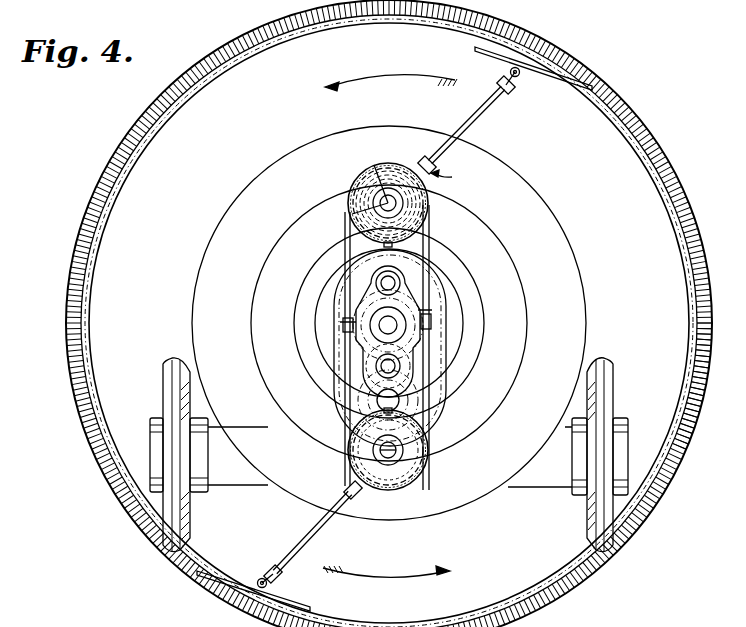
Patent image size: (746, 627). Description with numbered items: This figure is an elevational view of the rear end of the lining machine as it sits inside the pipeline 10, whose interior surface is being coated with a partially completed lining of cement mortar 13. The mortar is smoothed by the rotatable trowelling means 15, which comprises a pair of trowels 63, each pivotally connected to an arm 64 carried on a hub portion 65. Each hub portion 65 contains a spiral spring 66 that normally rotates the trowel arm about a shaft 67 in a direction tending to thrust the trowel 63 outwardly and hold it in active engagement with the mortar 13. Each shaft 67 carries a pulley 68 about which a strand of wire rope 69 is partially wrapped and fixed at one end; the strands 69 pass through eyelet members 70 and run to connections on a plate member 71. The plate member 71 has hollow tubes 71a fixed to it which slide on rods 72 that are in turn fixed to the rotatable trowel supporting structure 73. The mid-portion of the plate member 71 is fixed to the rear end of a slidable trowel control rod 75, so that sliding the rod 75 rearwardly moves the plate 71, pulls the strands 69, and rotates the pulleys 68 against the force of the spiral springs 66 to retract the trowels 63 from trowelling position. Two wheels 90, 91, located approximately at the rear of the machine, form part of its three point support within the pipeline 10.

The pipeline 10 is at (640, 127).
The lining of cement mortar 13 is at (618, 123).
The rotatable trowelling means 15 is at (453, 177).
The trowel 63 is at (541, 73).
The arm 64 is at (462, 118).
The hub portion 65 is at (381, 163).
The spiral spring 66 is at (365, 186).
The shaft 67 is at (350, 220).
The pulley 68 is at (430, 208).
The strand of wire rope 69 is at (428, 236).
The eyelet member 70 is at (430, 312).
The plate member 71 is at (407, 300).
The hollow tube 71a is at (386, 276).
The rod 72 is at (400, 293).
The rotatable trowel supporting structure 73 is at (347, 249).
The slidable trowel control rod 75 is at (366, 330).
The wheel 90 is at (164, 370).
The wheel 91 is at (608, 372).